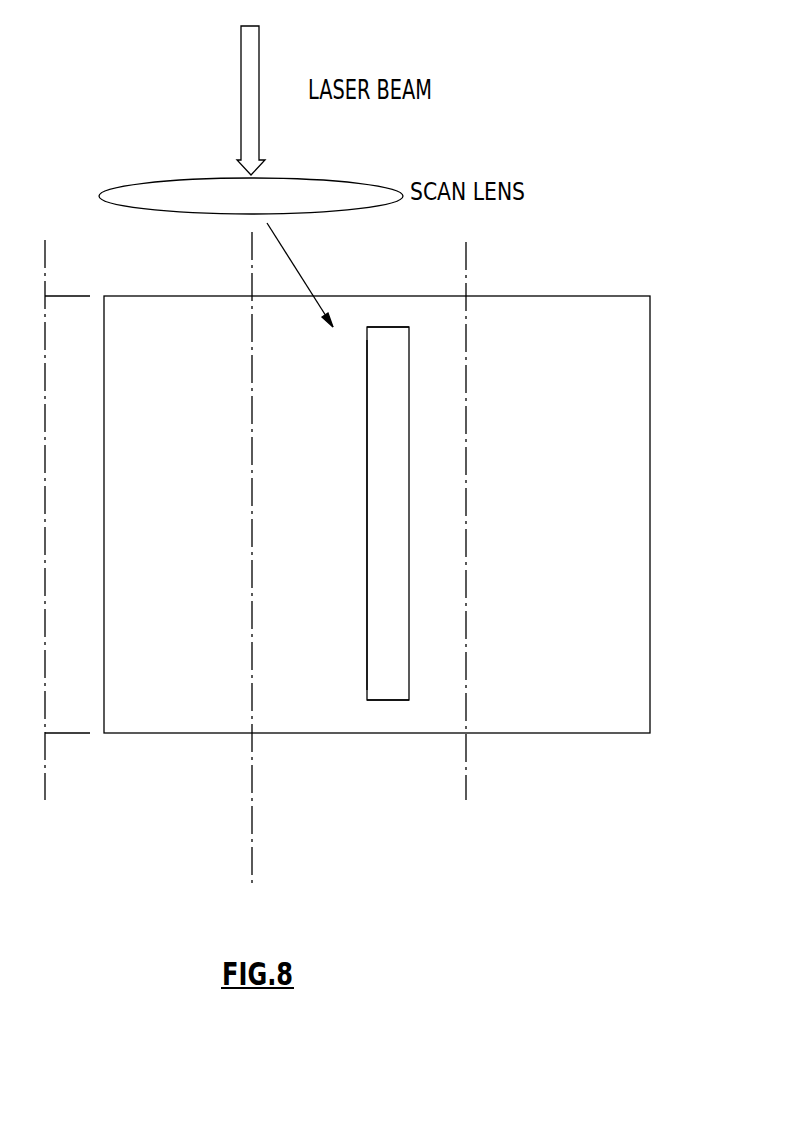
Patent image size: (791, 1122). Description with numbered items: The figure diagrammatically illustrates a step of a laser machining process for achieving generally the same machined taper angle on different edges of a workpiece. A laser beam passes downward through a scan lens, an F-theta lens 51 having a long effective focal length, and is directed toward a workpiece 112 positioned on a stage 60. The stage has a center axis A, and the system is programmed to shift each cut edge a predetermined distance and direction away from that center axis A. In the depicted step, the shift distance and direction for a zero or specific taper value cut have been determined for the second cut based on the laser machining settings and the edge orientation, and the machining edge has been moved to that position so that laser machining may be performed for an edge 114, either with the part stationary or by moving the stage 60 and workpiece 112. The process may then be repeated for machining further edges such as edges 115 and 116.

The F-theta lens 51 is at (157, 193).
The center axis A is at (252, 272).
The stage 60 is at (627, 733).
The workpiece 112 is at (409, 556).
The edge 114 is at (367, 364).
The edge 115 is at (388, 327).
The edge 116 is at (390, 700).